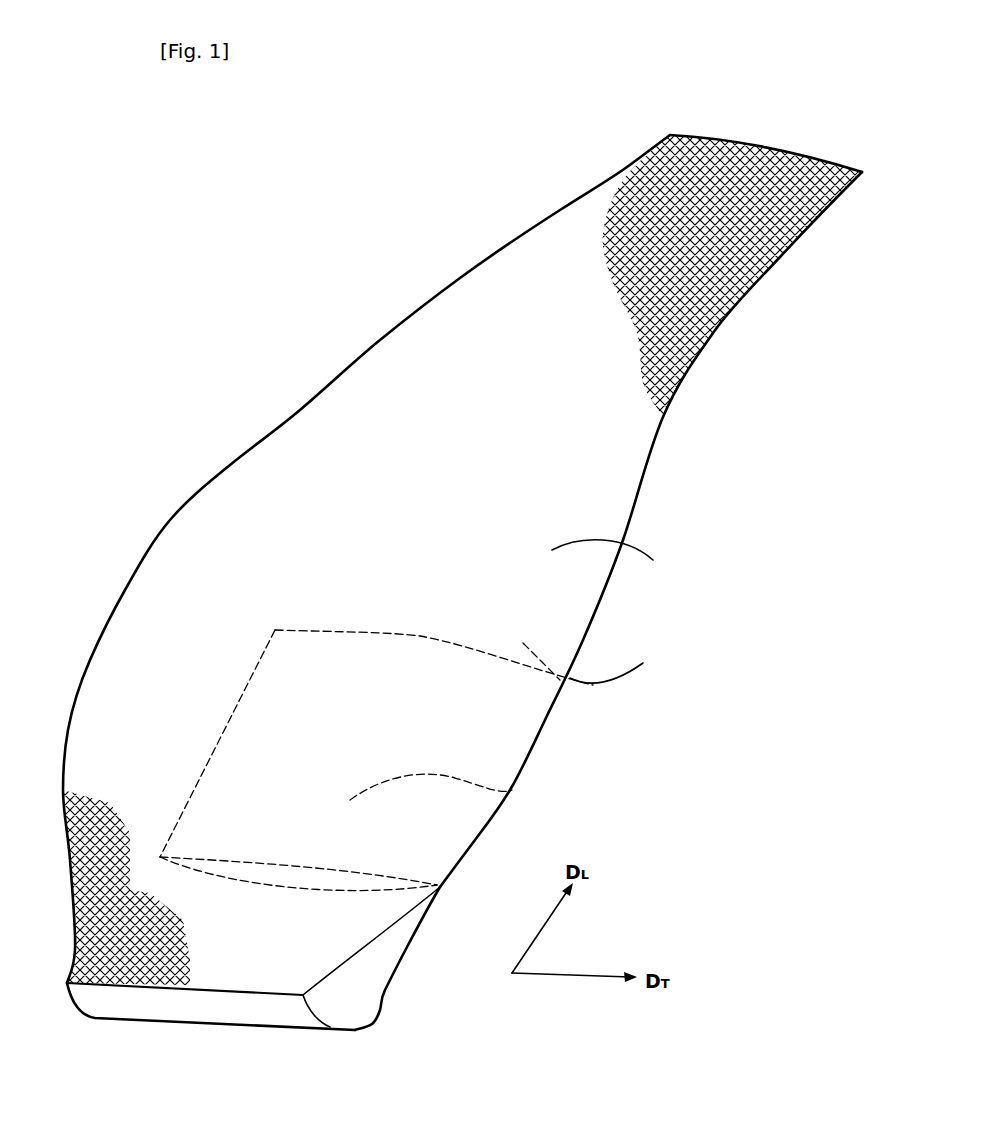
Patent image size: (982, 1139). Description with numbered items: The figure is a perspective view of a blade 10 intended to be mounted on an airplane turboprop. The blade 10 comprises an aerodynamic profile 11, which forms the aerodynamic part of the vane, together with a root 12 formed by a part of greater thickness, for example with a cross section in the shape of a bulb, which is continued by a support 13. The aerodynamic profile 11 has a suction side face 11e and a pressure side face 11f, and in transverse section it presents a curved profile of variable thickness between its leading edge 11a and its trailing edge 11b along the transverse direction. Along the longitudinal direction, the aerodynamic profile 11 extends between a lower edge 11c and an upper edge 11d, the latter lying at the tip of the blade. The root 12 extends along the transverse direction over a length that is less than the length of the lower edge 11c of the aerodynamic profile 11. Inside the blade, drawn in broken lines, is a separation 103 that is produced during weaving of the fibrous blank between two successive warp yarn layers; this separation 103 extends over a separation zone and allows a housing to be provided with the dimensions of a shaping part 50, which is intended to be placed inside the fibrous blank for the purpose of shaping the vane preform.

The blade 10 is at (336, 233).
The aerodynamic profile 11 is at (290, 437).
The leading edge 11a is at (137, 547).
The trailing edge 11b is at (650, 455).
The lower edge 11c is at (433, 900).
The upper edge 11d is at (740, 147).
The suction side face 11e is at (617, 563).
The pressure side face 11f is at (598, 663).
The root 12 is at (251, 1013).
The support 13 is at (360, 990).
The shaping part 50 is at (512, 790).
The separation 103 is at (416, 637).